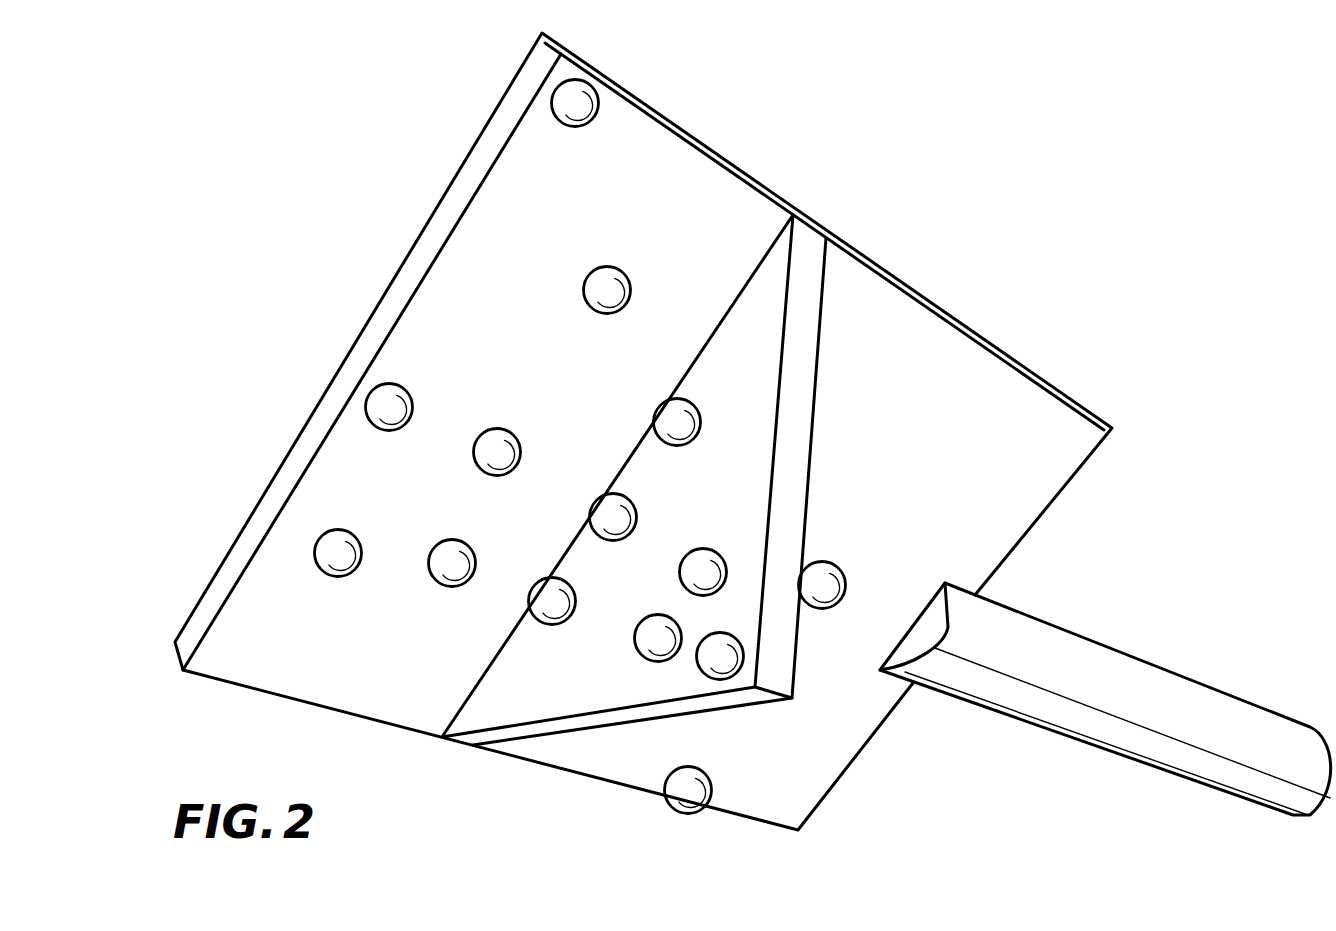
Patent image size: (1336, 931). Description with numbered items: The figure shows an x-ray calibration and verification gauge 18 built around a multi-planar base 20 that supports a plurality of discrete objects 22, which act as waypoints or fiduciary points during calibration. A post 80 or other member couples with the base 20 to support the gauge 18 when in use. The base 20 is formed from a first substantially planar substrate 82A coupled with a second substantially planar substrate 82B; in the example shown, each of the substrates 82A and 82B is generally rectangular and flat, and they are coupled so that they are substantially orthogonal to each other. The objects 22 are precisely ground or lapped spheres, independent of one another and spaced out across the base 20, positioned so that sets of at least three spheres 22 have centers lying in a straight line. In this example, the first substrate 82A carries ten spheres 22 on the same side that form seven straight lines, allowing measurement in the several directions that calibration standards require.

The gauge 18 is at (218, 428).
The multi-planar base 20 is at (287, 348).
The discrete objects 22 is at (637, 622).
The post 80 is at (1215, 705).
The first substrate 82A is at (987, 406).
The second substrate 82B is at (760, 333).